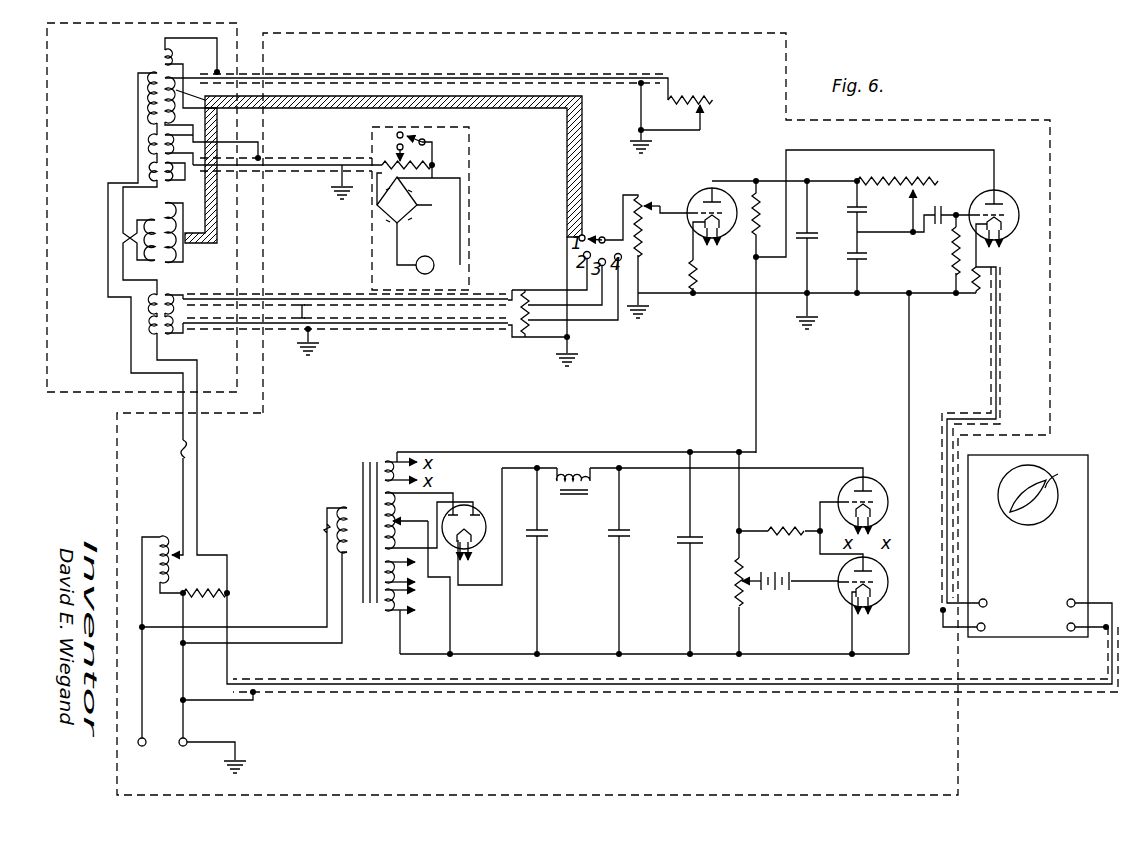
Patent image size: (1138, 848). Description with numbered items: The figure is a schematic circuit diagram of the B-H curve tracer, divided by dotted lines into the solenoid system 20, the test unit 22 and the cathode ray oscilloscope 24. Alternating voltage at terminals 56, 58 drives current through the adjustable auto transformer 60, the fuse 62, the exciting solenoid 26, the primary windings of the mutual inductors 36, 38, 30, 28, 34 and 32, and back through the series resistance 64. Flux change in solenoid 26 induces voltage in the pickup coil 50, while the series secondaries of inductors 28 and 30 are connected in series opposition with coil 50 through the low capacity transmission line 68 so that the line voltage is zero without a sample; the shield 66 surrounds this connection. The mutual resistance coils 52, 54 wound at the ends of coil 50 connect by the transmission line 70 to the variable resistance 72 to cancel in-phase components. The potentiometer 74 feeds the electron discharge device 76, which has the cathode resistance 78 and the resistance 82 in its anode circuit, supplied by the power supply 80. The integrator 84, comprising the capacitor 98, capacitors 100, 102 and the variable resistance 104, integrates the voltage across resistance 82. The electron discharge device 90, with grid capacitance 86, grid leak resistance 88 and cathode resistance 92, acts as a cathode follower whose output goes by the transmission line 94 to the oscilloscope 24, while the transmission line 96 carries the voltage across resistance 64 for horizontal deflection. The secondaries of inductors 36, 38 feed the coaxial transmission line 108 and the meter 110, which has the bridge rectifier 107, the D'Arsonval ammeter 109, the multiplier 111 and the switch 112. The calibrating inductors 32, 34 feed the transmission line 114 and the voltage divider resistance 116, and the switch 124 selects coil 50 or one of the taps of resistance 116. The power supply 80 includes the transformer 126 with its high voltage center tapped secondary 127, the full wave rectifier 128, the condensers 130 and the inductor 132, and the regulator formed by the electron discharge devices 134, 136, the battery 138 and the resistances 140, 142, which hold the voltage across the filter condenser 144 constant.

The solenoid system 20 is at (46, 341).
The test unit 22 is at (960, 731).
The cathode ray oscilloscope 24 is at (1089, 522).
The exciting solenoid 26 is at (147, 100).
The mutual inductor 28 is at (168, 262).
The mutual inductor 30 is at (156, 224).
The calibrating mutual inductor 32 is at (150, 330).
The calibrating mutual inductor 34 is at (150, 305).
The mutual inductor 36 is at (150, 141).
The mutual inductor 38 is at (150, 172).
The pickup coil 50 is at (178, 86).
The mutual resistance coil 52 is at (166, 57).
The mutual resistance coil 54 is at (162, 105).
The terminal 56 is at (145, 739).
The terminal 58 is at (193, 734).
The adjustable auto transformer 60 is at (160, 543).
The fuse 62 is at (180, 450).
The series resistance 64 is at (216, 590).
The shield 66 is at (220, 212).
The low capacity transmission line 68 is at (280, 106).
The transmission line 70 is at (322, 74).
The variable resistance 72 is at (690, 100).
The potentiometer 74 is at (641, 228).
The electron discharge device 76 is at (700, 200).
The resistance 78 is at (699, 278).
The power supply 80 is at (576, 442).
The resistance 82 is at (760, 192).
The integrator 84 is at (844, 222).
The capacitance 86 is at (945, 205).
The resistance 88 is at (954, 250).
The electron discharge device 90 is at (1010, 202).
The cathode resistance 92 is at (975, 292).
The transmission line 94 is at (1001, 354).
The transmission line 96 is at (486, 692).
The B-H curve 98 is at (804, 221).
The capacitor 100 is at (868, 210).
The capacitor 102 is at (868, 258).
The variable resistance 104 is at (915, 174).
The bridge rectifier 107 is at (418, 215).
The coaxial transmission line 108 is at (302, 163).
The D'Arsonval ammeter 109 is at (436, 270).
The meter 110 is at (470, 160).
The multiplier 111 is at (425, 163).
The switch 112 is at (408, 134).
The transmission line 114 is at (345, 313).
The voltage divider resistance 116 is at (525, 292).
The switch 124 is at (600, 237).
The transformer 126 is at (365, 525).
The high voltage center tapped secondary 127 is at (409, 520).
The full wave rectifier 128 is at (482, 512).
The condenser 130 is at (542, 540).
The inductor 132 is at (575, 491).
The electron discharge device 134 is at (886, 490).
The electron discharge device 136 is at (886, 578).
The battery 138 is at (772, 571).
The resistance 140 is at (736, 595).
The resistance 142 is at (798, 529).
The filter condenser 144 is at (685, 542).